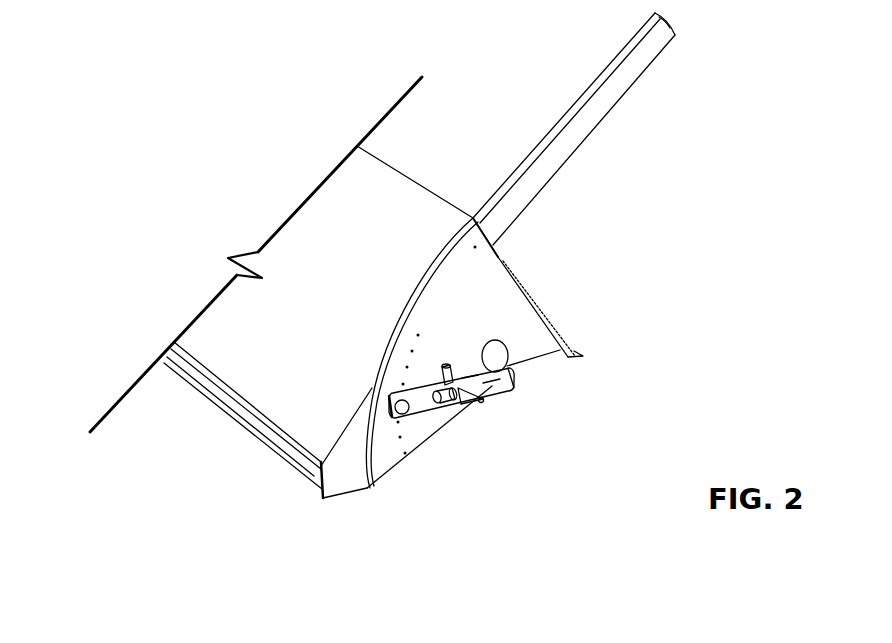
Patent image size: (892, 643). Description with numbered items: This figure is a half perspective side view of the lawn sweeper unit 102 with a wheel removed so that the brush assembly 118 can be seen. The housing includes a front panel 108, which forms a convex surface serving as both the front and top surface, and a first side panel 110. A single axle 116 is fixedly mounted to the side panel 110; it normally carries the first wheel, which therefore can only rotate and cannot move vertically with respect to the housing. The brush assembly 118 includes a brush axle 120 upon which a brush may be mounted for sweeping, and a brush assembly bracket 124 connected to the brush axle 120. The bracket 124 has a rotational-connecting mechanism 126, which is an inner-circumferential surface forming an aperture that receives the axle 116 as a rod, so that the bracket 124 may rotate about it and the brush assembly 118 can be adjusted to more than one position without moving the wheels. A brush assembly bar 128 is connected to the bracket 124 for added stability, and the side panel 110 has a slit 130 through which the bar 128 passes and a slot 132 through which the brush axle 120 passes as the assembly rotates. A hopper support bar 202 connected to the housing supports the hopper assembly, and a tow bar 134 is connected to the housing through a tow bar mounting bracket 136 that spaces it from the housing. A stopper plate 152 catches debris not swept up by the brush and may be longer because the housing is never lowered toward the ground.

The lawn sweeper unit 102 is at (181, 168).
The front panel 108 is at (228, 312).
The first side panel 110 is at (485, 262).
The axle 116 is at (470, 378).
The brush assembly 118 is at (421, 417).
The brush axle 120 is at (453, 388).
The brush assembly bracket 124 is at (483, 383).
The rotational-connecting mechanism 126 is at (463, 398).
The brush assembly bar 128 is at (513, 366).
The slit 130 is at (500, 355).
The slot 132 is at (440, 384).
The tow bar 134 is at (243, 410).
The tow bar mounting bracket 136 is at (337, 478).
The stopper plate 152 is at (543, 318).
The hopper support bar 202 is at (566, 144).